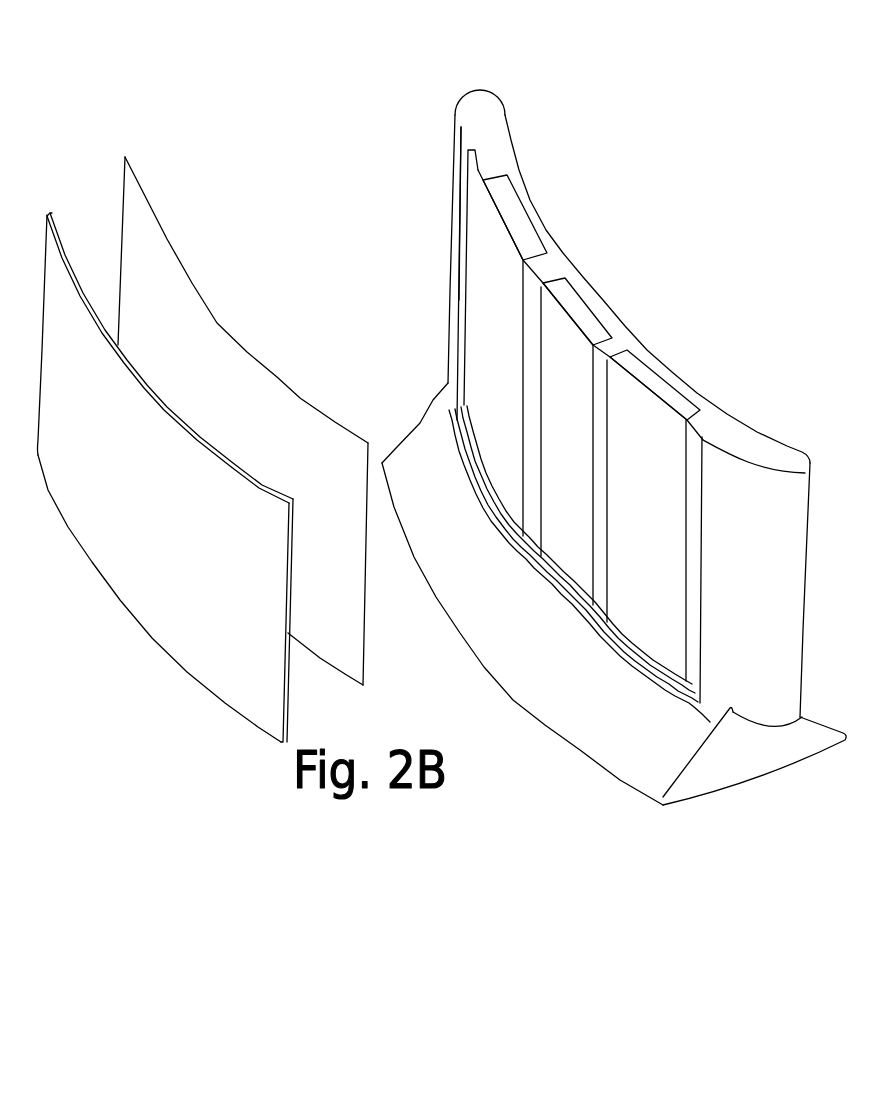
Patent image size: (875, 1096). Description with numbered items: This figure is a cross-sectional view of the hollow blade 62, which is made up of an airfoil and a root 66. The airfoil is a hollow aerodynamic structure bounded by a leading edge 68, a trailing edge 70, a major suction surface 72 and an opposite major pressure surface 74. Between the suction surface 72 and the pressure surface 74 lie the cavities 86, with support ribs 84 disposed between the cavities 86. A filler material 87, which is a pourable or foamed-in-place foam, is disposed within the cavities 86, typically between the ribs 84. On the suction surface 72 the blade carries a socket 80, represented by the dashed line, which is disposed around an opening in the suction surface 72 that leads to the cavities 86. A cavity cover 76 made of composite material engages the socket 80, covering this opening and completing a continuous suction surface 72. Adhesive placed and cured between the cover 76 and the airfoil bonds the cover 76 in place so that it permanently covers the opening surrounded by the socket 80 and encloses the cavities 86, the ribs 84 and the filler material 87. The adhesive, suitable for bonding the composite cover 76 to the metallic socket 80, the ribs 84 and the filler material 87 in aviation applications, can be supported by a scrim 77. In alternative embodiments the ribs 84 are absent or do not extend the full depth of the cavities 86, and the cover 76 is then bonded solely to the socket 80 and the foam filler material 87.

The hollow blade 62 is at (694, 157).
The root 66 is at (808, 747).
The leading edge 68 is at (476, 92).
The trailing edge 70 is at (797, 590).
The suction surface 72 is at (462, 200).
The pressure surface 74 is at (512, 143).
The cavity cover 76 is at (225, 452).
The scrim 77 is at (125, 160).
The socket 80 is at (723, 433).
The ribs 84 is at (603, 348).
The cavities 86 is at (542, 212).
The filler material 87 is at (643, 620).